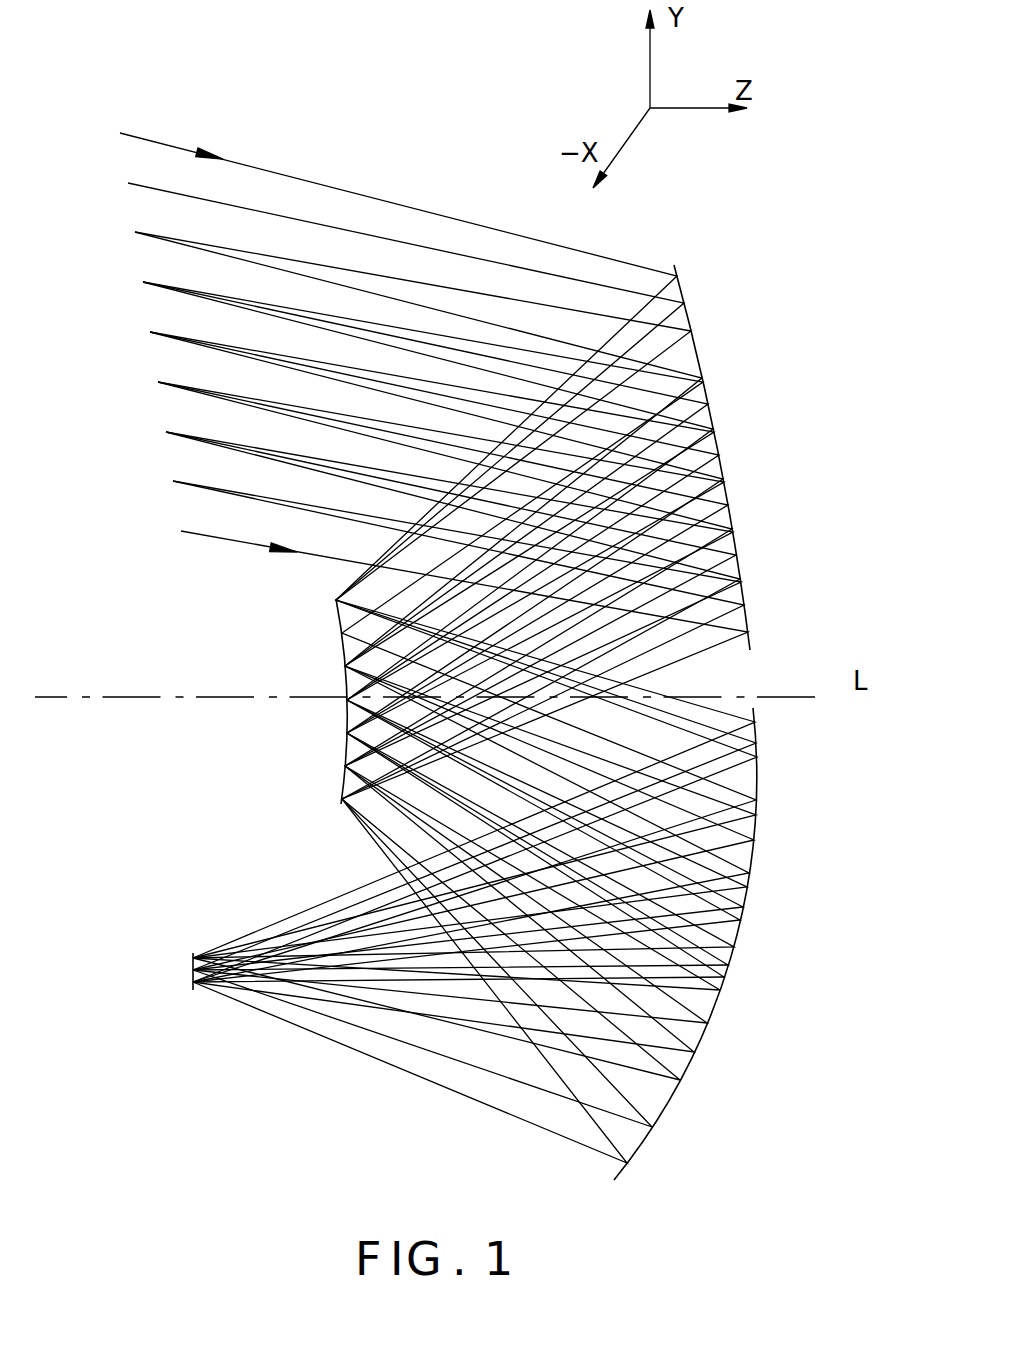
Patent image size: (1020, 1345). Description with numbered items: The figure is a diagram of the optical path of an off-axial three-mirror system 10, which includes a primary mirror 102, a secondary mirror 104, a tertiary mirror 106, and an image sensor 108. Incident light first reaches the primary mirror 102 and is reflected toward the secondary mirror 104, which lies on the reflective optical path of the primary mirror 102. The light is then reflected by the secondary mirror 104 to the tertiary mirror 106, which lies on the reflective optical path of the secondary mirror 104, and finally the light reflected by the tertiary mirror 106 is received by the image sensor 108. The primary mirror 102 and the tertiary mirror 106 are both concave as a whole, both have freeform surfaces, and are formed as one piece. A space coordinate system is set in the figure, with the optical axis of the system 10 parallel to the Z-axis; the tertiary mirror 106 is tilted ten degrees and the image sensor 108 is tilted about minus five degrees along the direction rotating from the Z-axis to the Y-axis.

The off-axial three-mirror system 10 is at (425, 88).
The primary mirror 102 is at (696, 345).
The secondary mirror 104 is at (337, 620).
The tertiary mirror 106 is at (687, 1065).
The image sensor 108 is at (192, 956).